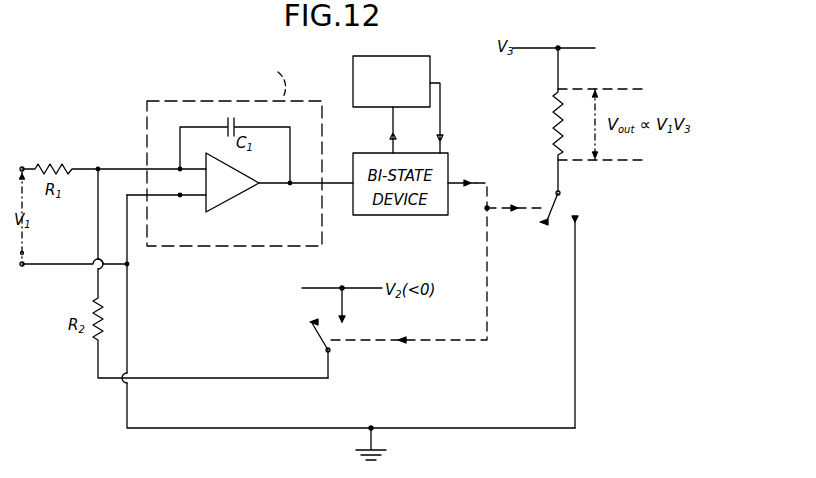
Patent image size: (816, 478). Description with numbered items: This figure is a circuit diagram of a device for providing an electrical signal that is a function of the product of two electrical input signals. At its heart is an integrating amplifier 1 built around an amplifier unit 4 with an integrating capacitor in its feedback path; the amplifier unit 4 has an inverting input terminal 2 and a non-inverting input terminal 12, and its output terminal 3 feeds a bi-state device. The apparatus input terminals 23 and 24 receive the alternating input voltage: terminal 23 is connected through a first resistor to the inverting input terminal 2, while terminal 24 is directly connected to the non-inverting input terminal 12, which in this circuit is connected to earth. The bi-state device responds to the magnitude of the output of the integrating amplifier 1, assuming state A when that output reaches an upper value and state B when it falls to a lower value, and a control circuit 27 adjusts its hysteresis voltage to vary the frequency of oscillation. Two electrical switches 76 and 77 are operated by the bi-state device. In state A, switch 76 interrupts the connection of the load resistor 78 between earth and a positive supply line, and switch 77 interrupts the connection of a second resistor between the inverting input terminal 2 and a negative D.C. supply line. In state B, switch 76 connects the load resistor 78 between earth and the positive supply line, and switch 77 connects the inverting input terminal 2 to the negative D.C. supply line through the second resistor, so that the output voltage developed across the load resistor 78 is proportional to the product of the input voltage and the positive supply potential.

The integrating amplifier 1 is at (306, 100).
The input terminal 2 is at (181, 166).
The output terminal 3 is at (290, 187).
The amplifier unit 4 is at (232, 198).
The non-inverting input terminal 12 is at (180, 199).
The input terminal 23 is at (23, 166).
The input terminal 24 is at (22, 268).
The control circuit 27 is at (430, 60).
The switch 76 is at (562, 205).
The switch 77 is at (322, 344).
The load resistor 78 is at (553, 104).